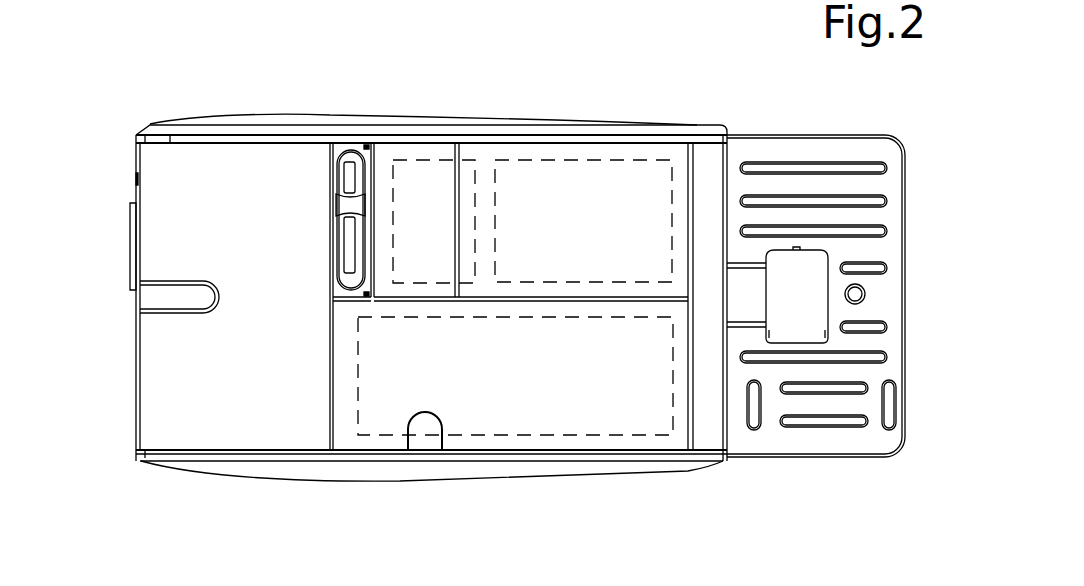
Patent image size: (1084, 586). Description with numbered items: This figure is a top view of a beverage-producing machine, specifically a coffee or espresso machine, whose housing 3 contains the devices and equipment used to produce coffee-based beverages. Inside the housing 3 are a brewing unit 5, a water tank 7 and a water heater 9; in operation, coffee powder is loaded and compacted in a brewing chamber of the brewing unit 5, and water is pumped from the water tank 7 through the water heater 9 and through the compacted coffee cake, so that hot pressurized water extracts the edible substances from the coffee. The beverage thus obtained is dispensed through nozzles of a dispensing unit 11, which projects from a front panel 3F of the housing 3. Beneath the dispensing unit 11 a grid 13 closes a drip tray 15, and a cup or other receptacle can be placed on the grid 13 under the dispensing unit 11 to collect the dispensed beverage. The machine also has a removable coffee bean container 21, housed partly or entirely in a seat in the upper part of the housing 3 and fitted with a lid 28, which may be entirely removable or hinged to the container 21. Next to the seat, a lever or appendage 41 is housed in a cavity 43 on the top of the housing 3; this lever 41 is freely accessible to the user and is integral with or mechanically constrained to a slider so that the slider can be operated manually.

The housing 3 is at (697, 125).
The front panel 3F is at (728, 428).
The brewing unit 5 is at (598, 160).
The water tank 7 is at (550, 435).
The water heater 9 is at (423, 160).
The dispensing unit 11 is at (814, 311).
The grid 13 is at (877, 192).
The drip tray 15 is at (363, 0).
The removable coffee bean container 21 is at (187, 229).
The lid 28 is at (244, 358).
The lever or appendage 41 is at (337, 210).
The cavity 43 is at (353, 248).